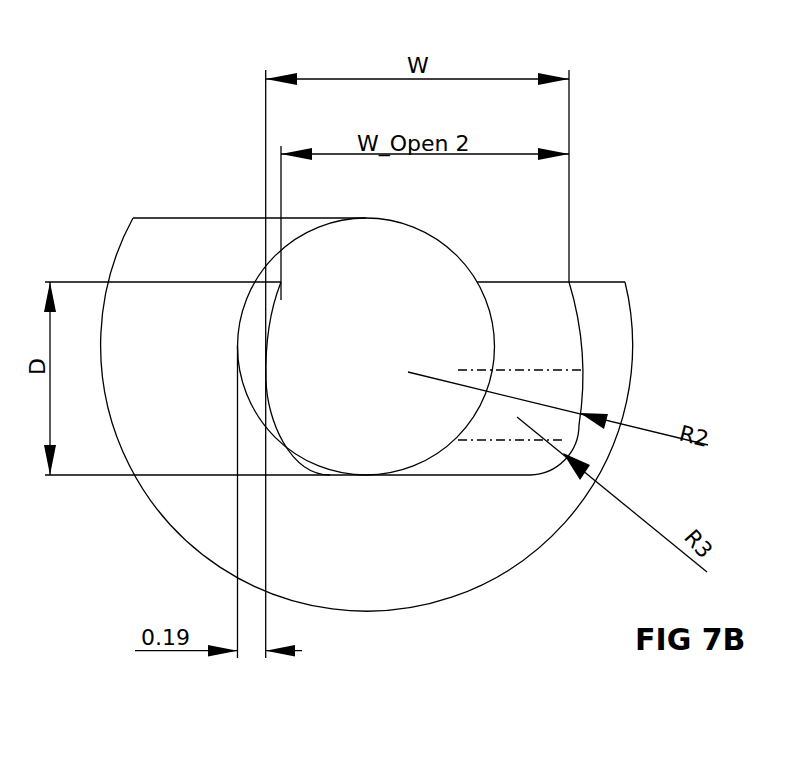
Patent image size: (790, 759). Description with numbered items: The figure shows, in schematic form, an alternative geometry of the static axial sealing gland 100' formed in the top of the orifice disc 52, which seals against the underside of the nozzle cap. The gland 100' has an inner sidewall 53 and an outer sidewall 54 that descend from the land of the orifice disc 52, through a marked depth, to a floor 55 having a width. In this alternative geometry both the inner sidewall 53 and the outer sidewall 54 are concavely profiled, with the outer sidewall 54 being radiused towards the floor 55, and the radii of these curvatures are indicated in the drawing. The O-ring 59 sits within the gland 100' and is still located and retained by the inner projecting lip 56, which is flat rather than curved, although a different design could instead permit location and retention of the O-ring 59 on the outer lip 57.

The static axial sealing gland 100' is at (367, 351).
The orifice disc 52 is at (194, 366).
The inner sidewall 53 is at (267, 366).
The outer sidewall 54 is at (580, 392).
The floor 55 is at (418, 474).
The inner projecting lip 56 is at (275, 292).
The outer lip 57 is at (582, 297).
The O-ring 59 is at (366, 346).